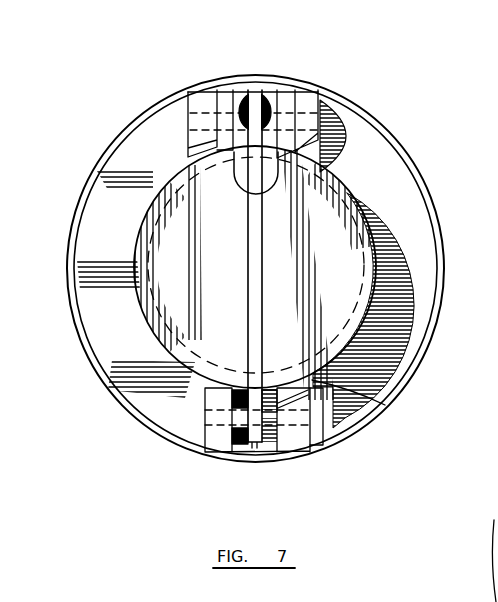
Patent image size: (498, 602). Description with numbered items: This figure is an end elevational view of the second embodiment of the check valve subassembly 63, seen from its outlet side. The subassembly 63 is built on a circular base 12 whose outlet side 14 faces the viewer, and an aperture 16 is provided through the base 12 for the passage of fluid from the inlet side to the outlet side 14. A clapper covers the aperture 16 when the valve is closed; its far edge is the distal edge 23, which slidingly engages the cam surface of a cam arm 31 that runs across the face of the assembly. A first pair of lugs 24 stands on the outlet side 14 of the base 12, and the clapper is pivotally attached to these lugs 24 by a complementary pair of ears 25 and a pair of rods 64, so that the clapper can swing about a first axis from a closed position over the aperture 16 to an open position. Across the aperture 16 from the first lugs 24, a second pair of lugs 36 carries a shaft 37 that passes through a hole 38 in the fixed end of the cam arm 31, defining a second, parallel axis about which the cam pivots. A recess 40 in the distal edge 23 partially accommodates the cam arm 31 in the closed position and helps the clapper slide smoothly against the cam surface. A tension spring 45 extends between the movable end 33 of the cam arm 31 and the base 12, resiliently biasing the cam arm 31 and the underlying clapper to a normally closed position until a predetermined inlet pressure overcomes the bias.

The base 12 is at (445, 300).
The outlet side 14 is at (417, 328).
The aperture 16 is at (395, 232).
The distal edge 23 is at (200, 384).
The first pair of lugs 24 is at (203, 88).
The pair of ears 25 is at (290, 90).
The cam arm 31 is at (263, 277).
The movable end 33 is at (215, 156).
The second pair of lugs 36 is at (217, 432).
The shaft 37 is at (300, 457).
The hole 38 is at (252, 444).
The recess 40 is at (340, 373).
The tension spring 45 is at (243, 90).
The check valve subassembly 63 is at (420, 150).
The pair of rods 64 is at (200, 118).